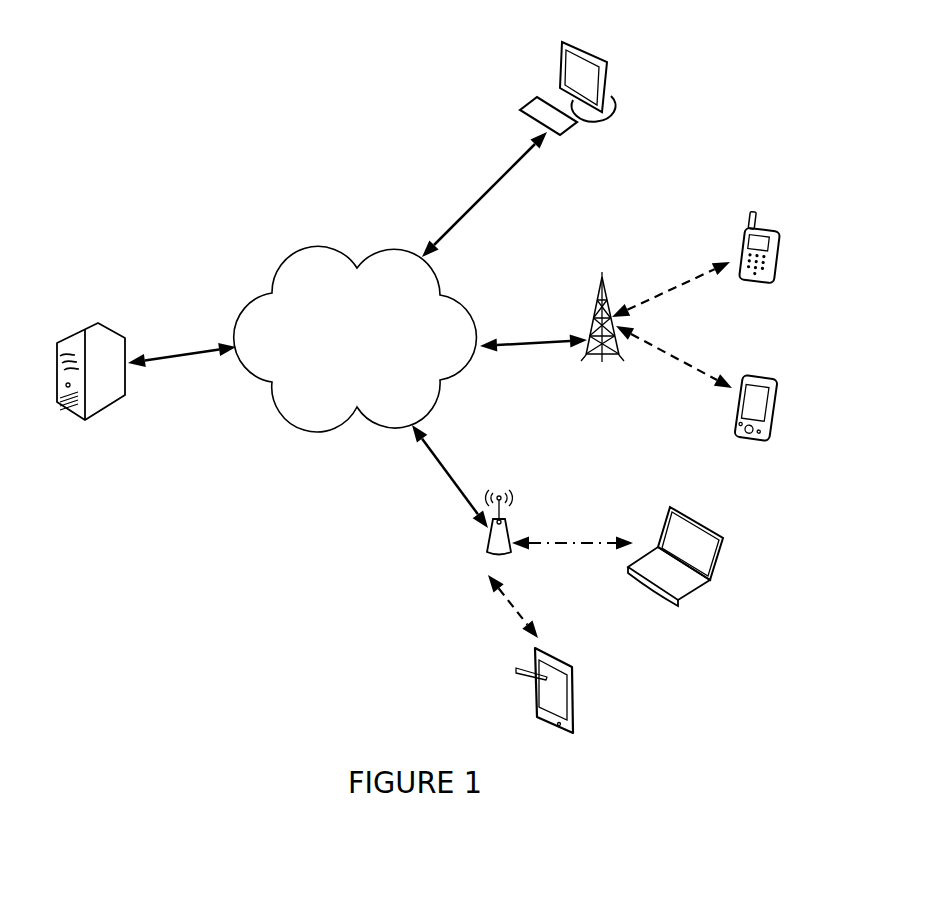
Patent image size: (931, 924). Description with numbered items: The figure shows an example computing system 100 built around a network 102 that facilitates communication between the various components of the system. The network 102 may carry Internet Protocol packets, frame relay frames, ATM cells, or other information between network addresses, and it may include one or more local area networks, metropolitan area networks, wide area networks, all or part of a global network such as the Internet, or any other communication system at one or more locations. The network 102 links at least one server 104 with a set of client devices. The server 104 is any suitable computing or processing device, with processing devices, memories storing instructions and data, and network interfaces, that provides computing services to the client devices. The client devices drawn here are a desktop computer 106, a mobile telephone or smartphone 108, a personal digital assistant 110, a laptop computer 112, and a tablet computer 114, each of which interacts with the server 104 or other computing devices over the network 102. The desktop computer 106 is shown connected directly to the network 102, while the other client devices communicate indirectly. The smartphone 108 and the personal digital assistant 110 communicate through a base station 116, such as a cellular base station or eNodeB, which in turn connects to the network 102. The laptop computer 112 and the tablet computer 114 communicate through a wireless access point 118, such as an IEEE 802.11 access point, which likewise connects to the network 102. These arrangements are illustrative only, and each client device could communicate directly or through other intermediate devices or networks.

The computing system 100 is at (205, 95).
The network 102 is at (295, 249).
The server 104 is at (84, 327).
The desktop computer 106 is at (562, 47).
The mobile telephone or smartphone 108 is at (770, 232).
The personal digital assistant (PDA) 110 is at (770, 383).
The laptop computer 112 is at (723, 540).
The tablet computer 114 is at (577, 668).
The base station 116 is at (624, 358).
The wireless access point 118 is at (505, 530).